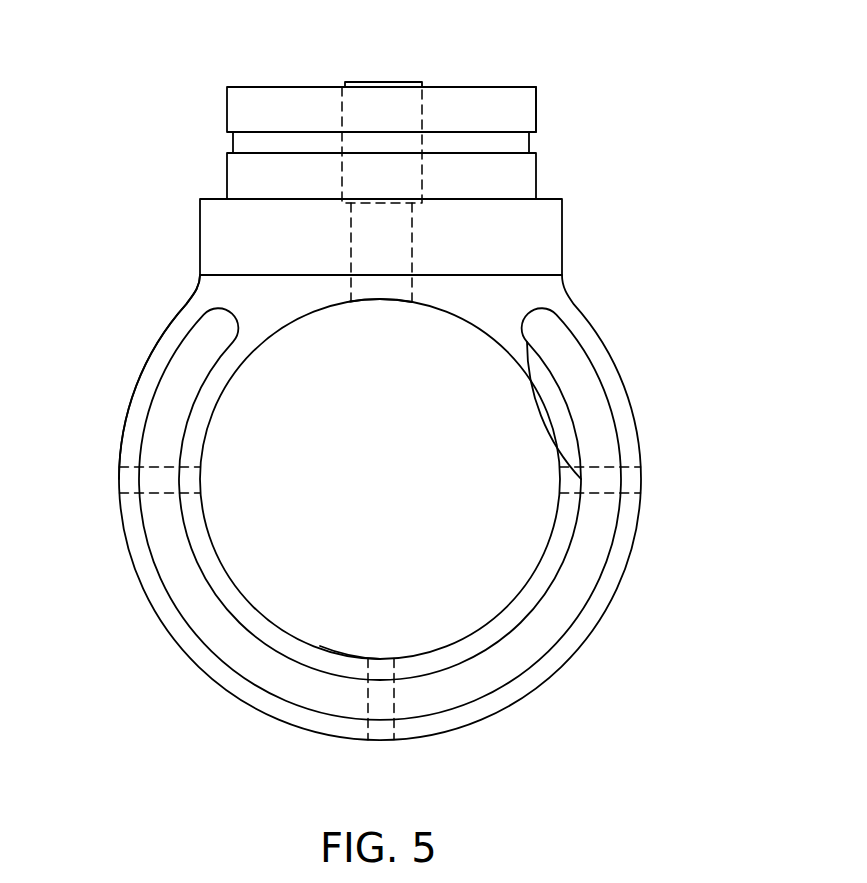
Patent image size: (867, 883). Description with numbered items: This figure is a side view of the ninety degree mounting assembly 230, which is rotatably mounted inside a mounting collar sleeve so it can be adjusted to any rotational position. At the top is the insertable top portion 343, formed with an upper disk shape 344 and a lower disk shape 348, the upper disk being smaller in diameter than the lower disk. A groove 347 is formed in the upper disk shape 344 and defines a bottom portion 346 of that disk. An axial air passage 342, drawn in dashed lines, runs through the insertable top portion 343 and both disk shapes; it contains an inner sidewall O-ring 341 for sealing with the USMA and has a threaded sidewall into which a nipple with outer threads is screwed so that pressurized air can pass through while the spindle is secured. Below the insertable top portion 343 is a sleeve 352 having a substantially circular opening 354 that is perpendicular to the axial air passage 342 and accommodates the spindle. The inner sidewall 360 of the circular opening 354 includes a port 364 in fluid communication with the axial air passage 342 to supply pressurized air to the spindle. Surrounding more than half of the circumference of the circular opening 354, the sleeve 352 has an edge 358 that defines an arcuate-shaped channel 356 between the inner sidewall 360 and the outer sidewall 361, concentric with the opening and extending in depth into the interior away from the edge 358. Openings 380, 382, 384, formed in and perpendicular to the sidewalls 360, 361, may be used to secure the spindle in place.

The ninety degree mounting assembly 230 is at (786, 310).
The inner sidewall O-ring 341 is at (362, 87).
The axial air passage 342 is at (400, 83).
The insertable top portion 343 is at (492, 87).
The upper disk shape 344 is at (536, 110).
The bottom portion of the upper disk shape 346 is at (227, 177).
The groove 347 is at (542, 148).
The lower disk shape 348 is at (200, 235).
The sleeve 352 is at (140, 375).
The circular opening 354 is at (490, 565).
The arcuate-shaped channel 356 is at (572, 357).
The edge 358 is at (557, 433).
The inner sidewall 360 is at (348, 648).
The outer sidewall 361 is at (223, 689).
The port 364 is at (382, 311).
The opening 380 is at (119, 480).
The opening 382 is at (383, 742).
The opening 384 is at (642, 482).